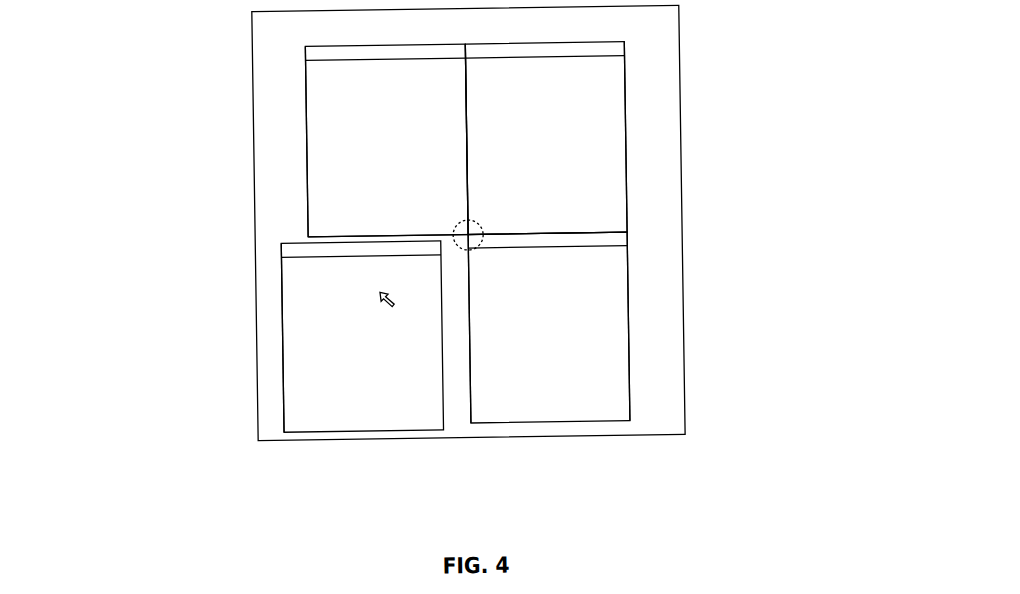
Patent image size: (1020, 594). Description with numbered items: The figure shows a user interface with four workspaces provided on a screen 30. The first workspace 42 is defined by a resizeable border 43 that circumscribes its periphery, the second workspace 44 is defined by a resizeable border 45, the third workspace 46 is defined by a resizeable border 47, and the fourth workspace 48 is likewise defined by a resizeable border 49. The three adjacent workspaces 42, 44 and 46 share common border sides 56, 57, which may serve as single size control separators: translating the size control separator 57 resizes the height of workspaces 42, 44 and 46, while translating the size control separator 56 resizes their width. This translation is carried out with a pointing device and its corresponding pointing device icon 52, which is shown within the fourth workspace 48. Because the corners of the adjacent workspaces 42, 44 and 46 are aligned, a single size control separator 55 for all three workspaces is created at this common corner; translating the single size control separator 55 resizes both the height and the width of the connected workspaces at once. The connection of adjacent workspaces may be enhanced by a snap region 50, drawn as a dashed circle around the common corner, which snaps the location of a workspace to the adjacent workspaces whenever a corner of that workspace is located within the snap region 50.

The screen 30 is at (594, 442).
The first workspace 42 is at (634, 84).
The resizeable border 43 is at (751, 135).
The second workspace 44 is at (635, 358).
The resizeable border 45 is at (627, 401).
The third workspace 46 is at (300, 114).
The resizeable border 47 is at (308, 156).
The fourth workspace 48 is at (274, 326).
The resizeable border 49 is at (281, 372).
The snap region 50 is at (479, 222).
The pointing device icon 52 is at (376, 299).
The single size control separator 55 is at (468, 235).
The common border side 56 is at (468, 101).
The common border side 57 is at (586, 236).